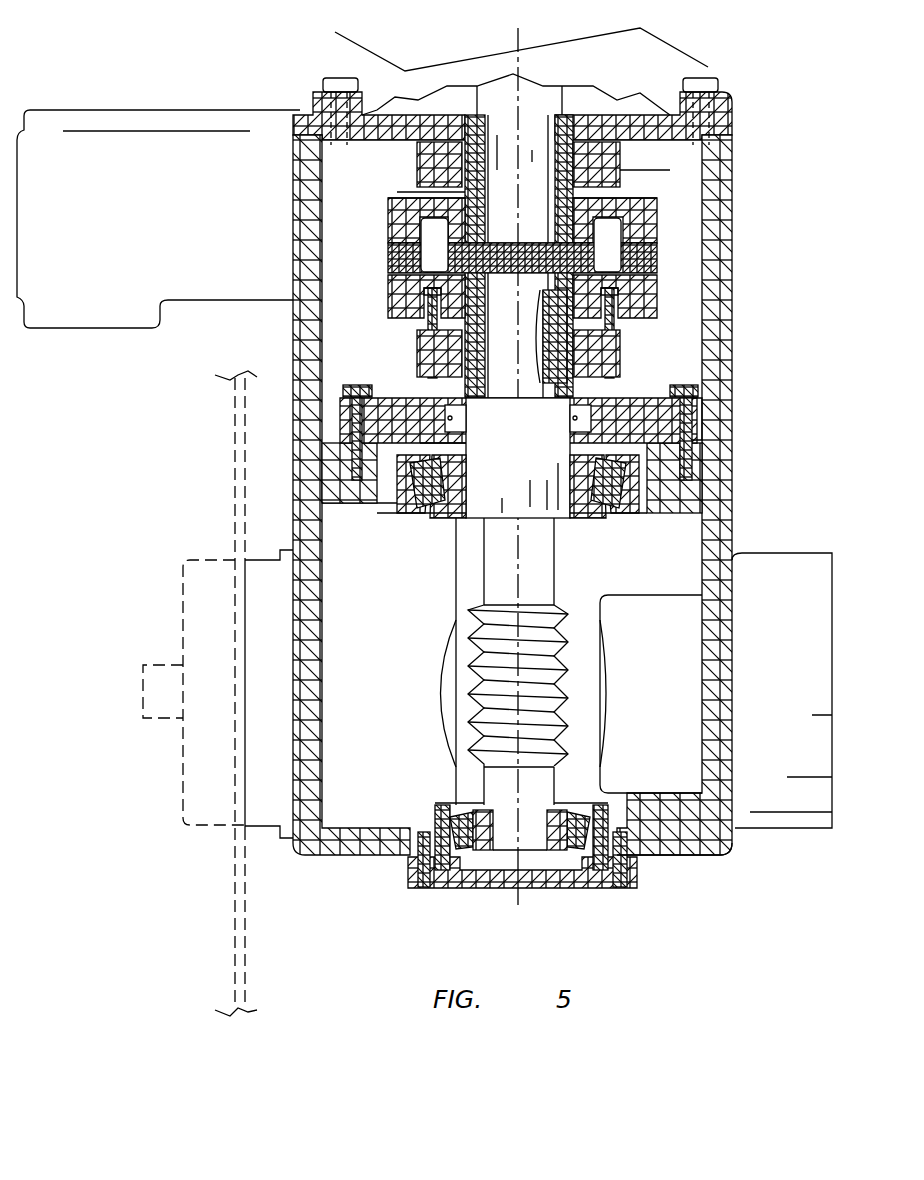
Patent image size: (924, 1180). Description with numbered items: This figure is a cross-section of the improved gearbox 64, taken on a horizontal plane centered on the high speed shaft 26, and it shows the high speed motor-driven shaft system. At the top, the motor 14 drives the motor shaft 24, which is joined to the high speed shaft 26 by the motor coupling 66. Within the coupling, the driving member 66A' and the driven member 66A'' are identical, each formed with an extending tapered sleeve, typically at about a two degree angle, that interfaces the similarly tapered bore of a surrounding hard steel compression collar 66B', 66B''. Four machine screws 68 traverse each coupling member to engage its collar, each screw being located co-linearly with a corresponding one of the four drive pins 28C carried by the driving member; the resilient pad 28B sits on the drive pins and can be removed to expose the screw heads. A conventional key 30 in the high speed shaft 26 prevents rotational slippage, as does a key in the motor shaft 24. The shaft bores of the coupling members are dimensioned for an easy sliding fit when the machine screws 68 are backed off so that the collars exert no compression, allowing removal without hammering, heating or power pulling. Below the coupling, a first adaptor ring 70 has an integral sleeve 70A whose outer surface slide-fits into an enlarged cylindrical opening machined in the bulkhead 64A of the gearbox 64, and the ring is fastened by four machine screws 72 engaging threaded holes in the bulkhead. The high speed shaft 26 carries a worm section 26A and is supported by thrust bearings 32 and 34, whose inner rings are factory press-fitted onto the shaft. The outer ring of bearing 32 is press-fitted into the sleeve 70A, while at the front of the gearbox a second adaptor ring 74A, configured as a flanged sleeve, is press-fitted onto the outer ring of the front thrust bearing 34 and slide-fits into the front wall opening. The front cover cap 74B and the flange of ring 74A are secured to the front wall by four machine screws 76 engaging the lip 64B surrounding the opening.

The motor 14 is at (615, 76).
The motor shaft 24 is at (535, 181).
The high speed shaft 26 is at (535, 438).
The worm 26A is at (530, 635).
The resilient pad 28B is at (640, 267).
The drive pins 28C is at (640, 235).
The key 30 is at (552, 334).
The thrust bearing 32 is at (643, 523).
The front thrust bearing 34 is at (702, 857).
The gearbox 64 is at (242, 62).
The bulkhead 64A is at (698, 447).
The lip 64B is at (633, 860).
The motor coupling 66 is at (365, 282).
The driving member 66A' is at (605, 202).
The driven member 66A'' is at (607, 292).
The compression collar 66B' is at (610, 158).
The compression collar 66B'' is at (621, 353).
The machine screws 68 is at (427, 328).
The first adaptor ring 70 is at (668, 420).
The integral sleeve 70A is at (660, 478).
The machine screws 72 is at (700, 395).
The second adaptor ring 74A is at (583, 796).
The front cover cap 74B is at (540, 880).
The machine screws 76 is at (427, 890).